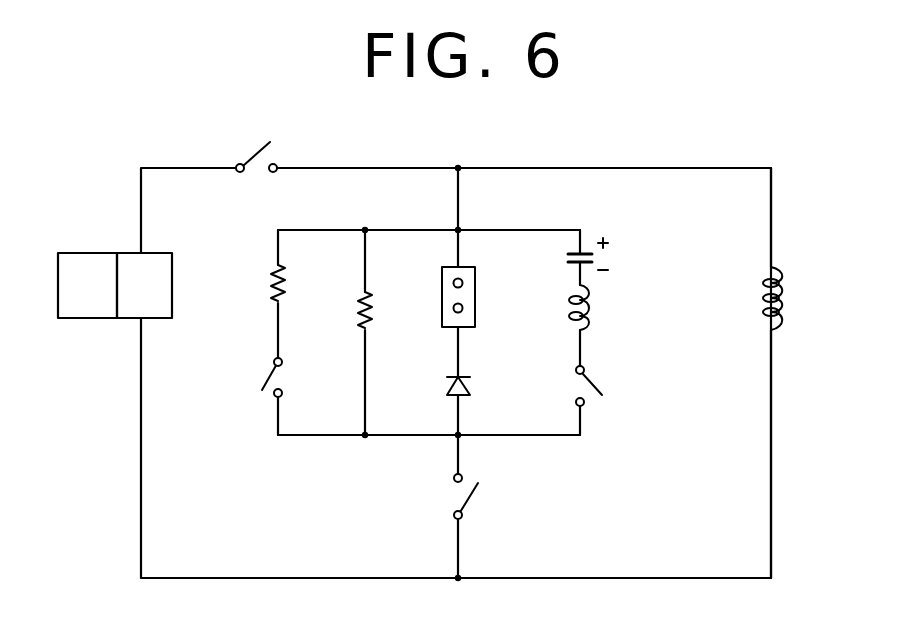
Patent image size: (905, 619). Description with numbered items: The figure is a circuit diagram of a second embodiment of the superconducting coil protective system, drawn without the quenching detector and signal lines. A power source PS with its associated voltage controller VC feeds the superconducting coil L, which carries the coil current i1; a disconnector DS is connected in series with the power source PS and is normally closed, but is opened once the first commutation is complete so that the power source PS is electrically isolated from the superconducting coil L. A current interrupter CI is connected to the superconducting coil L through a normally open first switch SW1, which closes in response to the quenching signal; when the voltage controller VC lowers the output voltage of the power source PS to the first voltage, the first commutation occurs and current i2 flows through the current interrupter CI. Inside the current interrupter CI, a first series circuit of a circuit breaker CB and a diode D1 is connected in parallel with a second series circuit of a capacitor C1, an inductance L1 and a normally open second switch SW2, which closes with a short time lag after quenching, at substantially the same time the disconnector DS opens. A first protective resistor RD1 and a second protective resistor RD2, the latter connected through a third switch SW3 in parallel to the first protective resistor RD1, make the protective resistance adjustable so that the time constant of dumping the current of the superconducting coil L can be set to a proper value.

The disconnector DS is at (256, 143).
The voltage controller VC is at (87, 285).
The power source PS is at (144, 285).
The second protective resistor RD2 is at (305, 283).
The first protective resistor RD1 is at (391, 310).
The third switch SW3 is at (238, 377).
The circuit breaker CB is at (478, 297).
The current interrupter CI is at (535, 362).
The diode D1 is at (476, 388).
The capacitor C1 is at (608, 256).
The inductance L1 is at (596, 307).
The second switch SW2 is at (616, 386).
The first switch SW1 is at (497, 496).
The superconducting coil L is at (782, 298).
The current i1 is at (805, 214).
The current i2 is at (497, 532).